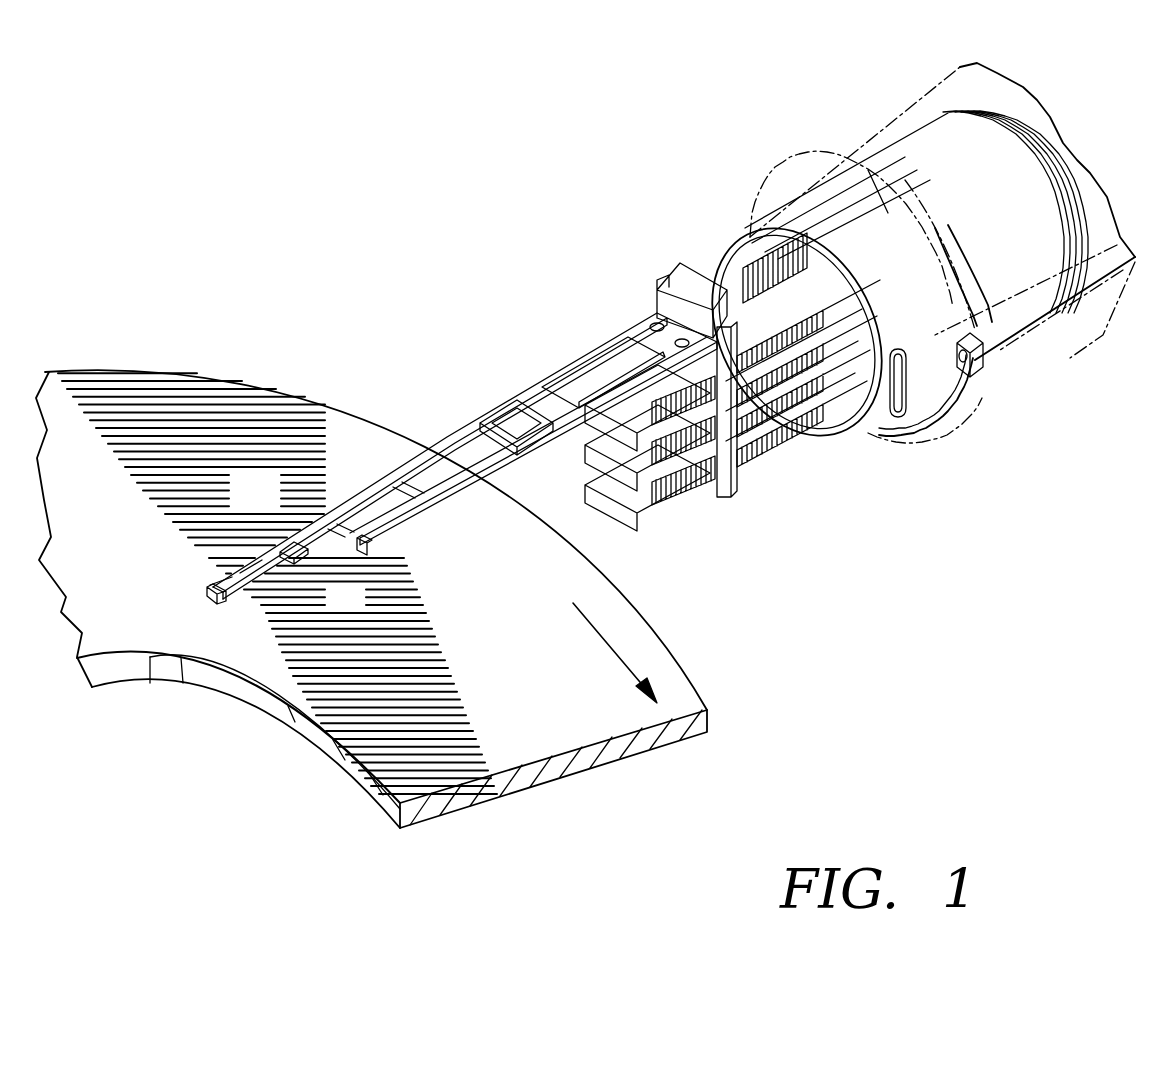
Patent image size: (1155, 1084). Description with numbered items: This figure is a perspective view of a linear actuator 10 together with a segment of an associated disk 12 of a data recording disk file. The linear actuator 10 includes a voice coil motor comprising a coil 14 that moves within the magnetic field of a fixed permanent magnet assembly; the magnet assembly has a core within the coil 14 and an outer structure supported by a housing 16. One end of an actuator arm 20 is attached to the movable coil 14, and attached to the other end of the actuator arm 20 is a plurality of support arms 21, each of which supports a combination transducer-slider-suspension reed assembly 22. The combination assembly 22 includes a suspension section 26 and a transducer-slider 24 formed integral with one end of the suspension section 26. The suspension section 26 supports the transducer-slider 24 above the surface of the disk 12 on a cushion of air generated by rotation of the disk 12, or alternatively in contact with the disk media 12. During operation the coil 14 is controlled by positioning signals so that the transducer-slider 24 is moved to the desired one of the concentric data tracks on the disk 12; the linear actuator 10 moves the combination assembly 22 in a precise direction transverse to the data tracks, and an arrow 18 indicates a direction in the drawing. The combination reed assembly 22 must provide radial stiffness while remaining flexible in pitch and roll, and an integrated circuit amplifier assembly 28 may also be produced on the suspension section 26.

The linear actuator 10 is at (692, 185).
The disk 12 is at (522, 675).
The coil 14 is at (1035, 150).
The housing 16 is at (1035, 363).
The direction of wafer movement 18 is at (612, 647).
The actuator arm 20 is at (778, 482).
The support arm 21 is at (510, 392).
The combination transducer-slider-suspension reed assembly 22 is at (249, 543).
The transducer-slider 24 is at (210, 604).
The suspension section 26 is at (213, 588).
The integrated circuit amplifier assembly 28 is at (298, 554).